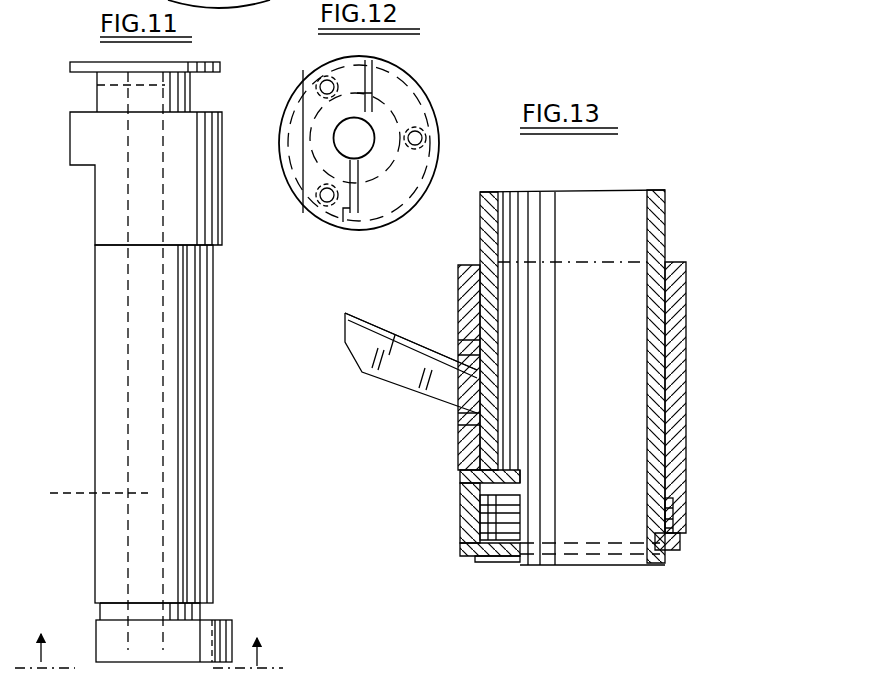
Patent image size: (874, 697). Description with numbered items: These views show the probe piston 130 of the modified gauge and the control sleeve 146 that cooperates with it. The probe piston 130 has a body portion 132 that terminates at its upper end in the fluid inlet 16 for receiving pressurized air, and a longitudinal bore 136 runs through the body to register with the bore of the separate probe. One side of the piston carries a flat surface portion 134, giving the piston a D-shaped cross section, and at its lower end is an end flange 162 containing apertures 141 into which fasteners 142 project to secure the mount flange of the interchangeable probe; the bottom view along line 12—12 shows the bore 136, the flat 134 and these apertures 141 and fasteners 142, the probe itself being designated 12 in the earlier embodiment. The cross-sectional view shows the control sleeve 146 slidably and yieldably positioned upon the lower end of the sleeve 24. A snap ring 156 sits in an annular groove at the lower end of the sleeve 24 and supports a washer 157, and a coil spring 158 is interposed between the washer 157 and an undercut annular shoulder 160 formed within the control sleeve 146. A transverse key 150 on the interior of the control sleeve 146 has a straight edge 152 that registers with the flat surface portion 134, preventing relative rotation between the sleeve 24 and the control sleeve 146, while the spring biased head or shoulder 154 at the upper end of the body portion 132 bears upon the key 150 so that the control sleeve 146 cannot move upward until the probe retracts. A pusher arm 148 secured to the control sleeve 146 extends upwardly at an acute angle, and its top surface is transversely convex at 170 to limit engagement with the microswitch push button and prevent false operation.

In FIG. 11, the probe 12 is at (160, 634).
In FIG. 11, the fluid inlet 16 is at (95, 89).
In FIG. 13, the sleeve 24 is at (665, 228).
In FIG. 11, the probe piston 130 is at (90, 347).
In FIG. 11, the body portion 132 is at (200, 422).
In FIG. 11, the flat surface portion 134 is at (95, 393).
In FIG. 12, the flat surface portion 134 is at (307, 173).
In FIG. 11, the longitudinal bore 136 is at (76, 486).
In FIG. 12, the longitudinal bore 136 is at (360, 133).
In FIG. 11, the apertures 141 is at (220, 622).
In FIG. 12, the apertures 141 is at (426, 137).
In FIG. 12, the fasteners 142 is at (328, 203).
In FIG. 13, the control sleeve 146 is at (686, 350).
In FIG. 13, the pusher arm 148 is at (432, 393).
In FIG. 13, the key 150 is at (512, 465).
In FIG. 13, the straight edge 152 is at (522, 476).
In FIG. 11, the head 154 is at (82, 147).
In FIG. 13, the snap ring 156 is at (472, 548).
In FIG. 13, the washer 157 is at (688, 538).
In FIG. 13, the coil spring 158 is at (512, 516).
In FIG. 13, the undercut annular shoulder 160 is at (475, 503).
In FIG. 11, the end flange 162 is at (232, 622).
In FIG. 12, the end flange 162 is at (438, 176).
In FIG. 13, the transversely convex top surface 170 is at (397, 338).